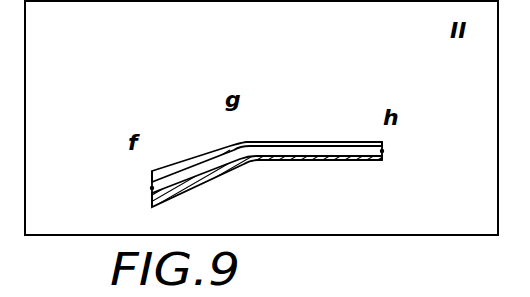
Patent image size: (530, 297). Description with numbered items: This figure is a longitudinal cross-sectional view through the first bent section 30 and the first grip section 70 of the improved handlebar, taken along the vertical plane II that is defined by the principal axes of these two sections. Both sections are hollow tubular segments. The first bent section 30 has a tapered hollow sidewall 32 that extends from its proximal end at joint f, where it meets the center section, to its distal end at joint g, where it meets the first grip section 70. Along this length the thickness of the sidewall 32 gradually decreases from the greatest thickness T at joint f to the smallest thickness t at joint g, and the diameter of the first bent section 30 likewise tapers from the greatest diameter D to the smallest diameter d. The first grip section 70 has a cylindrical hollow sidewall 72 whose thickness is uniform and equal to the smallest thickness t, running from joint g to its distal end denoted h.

The first bent section 30 is at (313, 116).
The tapered hollow sidewall 32 is at (176, 163).
The first grip section 70 is at (296, 134).
The cylindrical hollow sidewall 72 is at (332, 140).